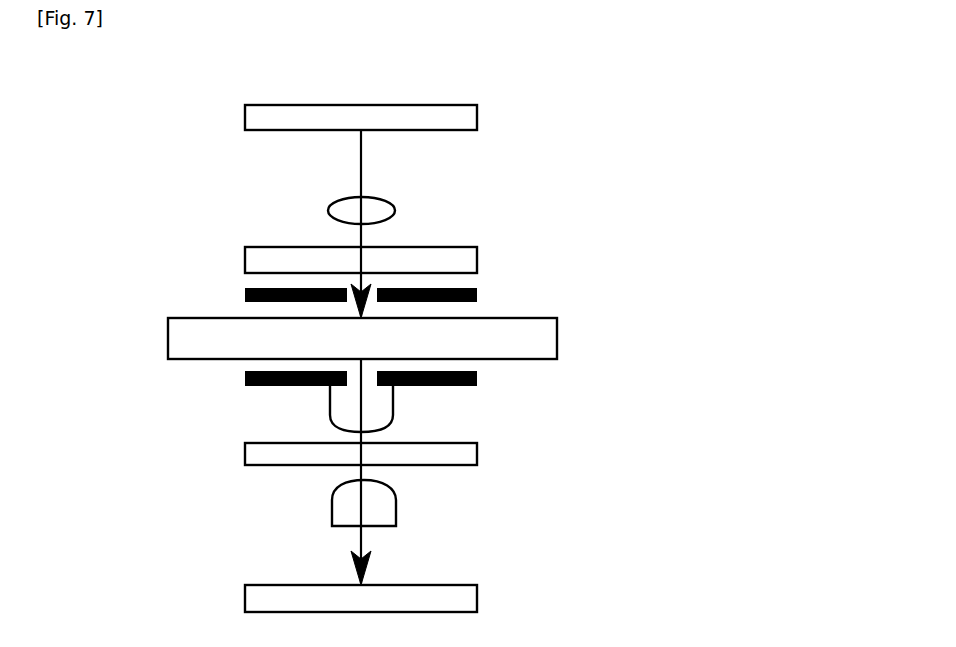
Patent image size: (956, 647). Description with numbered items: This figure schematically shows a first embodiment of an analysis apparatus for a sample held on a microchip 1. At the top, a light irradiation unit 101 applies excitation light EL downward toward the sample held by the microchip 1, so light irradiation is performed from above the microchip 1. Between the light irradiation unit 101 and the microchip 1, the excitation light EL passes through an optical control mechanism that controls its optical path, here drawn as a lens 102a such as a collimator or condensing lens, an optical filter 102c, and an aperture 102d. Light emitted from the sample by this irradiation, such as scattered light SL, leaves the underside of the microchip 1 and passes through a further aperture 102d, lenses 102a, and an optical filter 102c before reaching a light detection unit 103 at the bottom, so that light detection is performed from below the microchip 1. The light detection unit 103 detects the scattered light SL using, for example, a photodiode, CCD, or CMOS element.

The microchip 1 is at (530, 326).
The light irradiation unit 101 is at (432, 117).
The lens 102a is at (380, 212).
The optical filter 102c is at (462, 258).
The aperture 102d is at (476, 291).
The light detection unit 103 is at (450, 598).
The excitation light EL is at (346, 224).
The scattered light SL is at (380, 472).